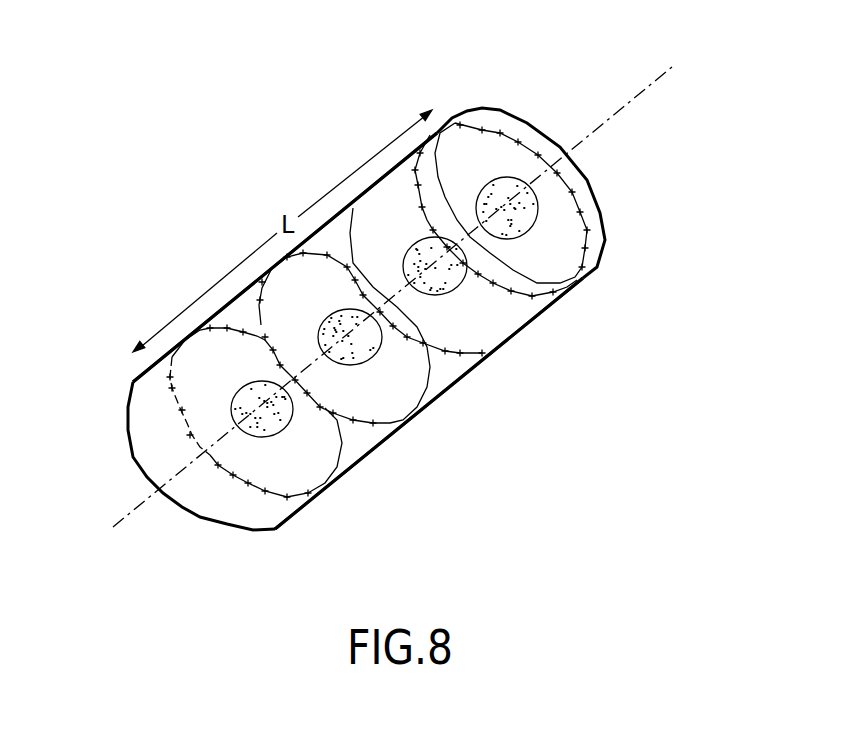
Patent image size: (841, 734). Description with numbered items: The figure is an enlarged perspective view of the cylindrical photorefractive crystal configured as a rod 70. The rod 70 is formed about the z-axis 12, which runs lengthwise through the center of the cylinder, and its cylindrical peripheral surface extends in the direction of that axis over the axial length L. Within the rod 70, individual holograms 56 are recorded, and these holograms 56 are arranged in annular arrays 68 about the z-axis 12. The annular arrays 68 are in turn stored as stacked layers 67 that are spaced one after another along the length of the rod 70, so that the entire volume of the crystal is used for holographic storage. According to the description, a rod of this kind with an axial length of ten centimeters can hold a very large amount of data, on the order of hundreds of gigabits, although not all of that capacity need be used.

The z-axis 12 is at (447, 297).
The individual holograms 56 is at (367, 258).
The stacked layers 67 is at (379, 269).
The annular arrays 68 is at (329, 331).
The rod 70 is at (366, 319).